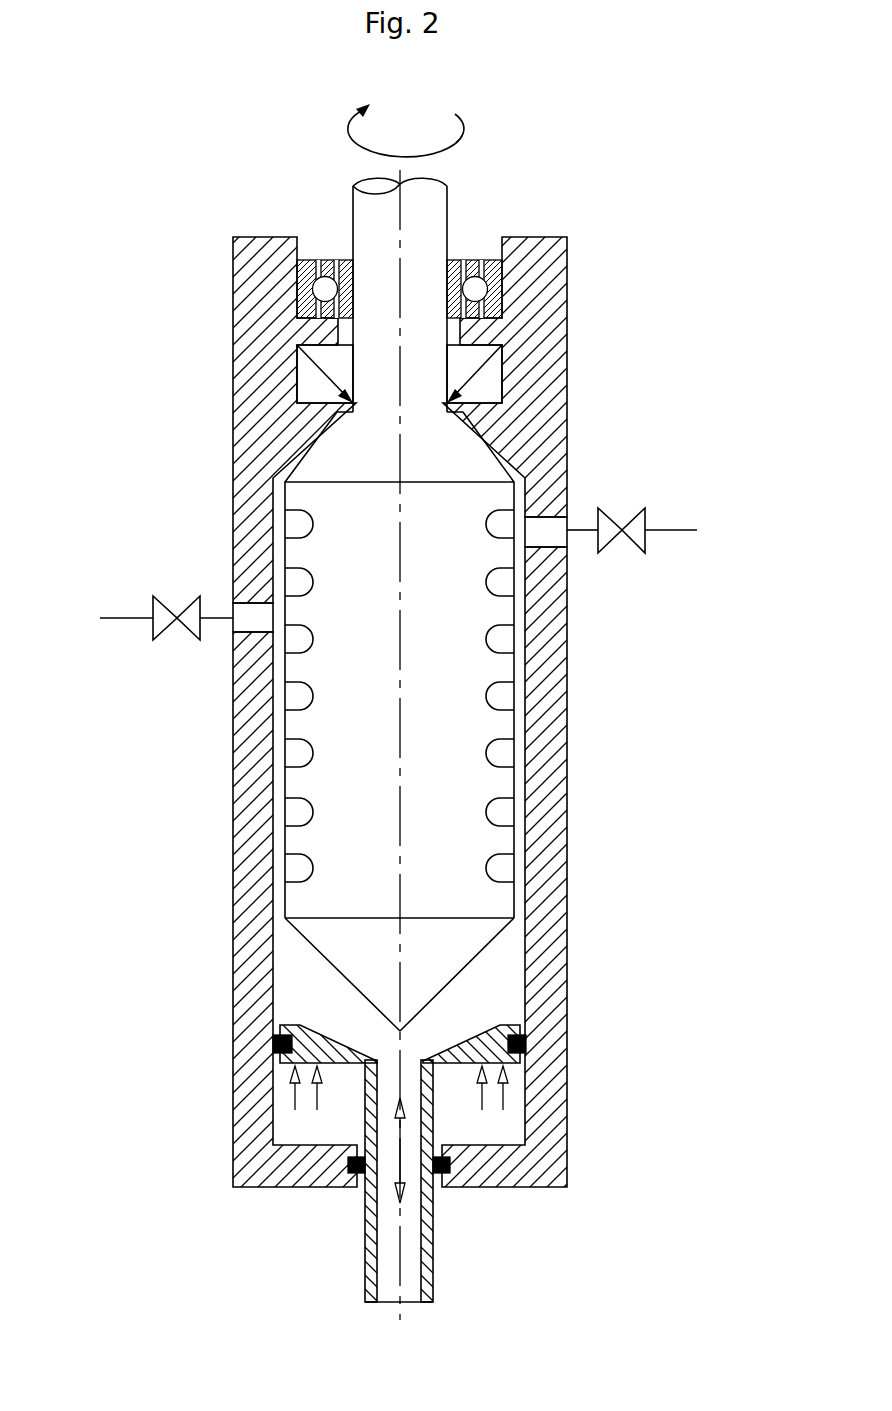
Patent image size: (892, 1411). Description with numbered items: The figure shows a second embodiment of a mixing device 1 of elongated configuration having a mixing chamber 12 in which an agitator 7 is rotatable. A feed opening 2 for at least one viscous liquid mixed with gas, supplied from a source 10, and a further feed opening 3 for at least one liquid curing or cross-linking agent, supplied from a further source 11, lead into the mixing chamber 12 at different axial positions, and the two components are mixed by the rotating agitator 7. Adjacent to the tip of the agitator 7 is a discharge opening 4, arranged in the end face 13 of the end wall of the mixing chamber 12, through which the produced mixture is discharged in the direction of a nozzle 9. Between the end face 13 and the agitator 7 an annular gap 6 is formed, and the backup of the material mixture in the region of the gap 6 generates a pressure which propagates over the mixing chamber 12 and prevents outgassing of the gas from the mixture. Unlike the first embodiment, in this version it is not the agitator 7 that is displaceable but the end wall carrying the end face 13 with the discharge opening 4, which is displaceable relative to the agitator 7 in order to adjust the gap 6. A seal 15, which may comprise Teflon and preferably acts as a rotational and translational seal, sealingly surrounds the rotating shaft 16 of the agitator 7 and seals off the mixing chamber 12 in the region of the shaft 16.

The mixing device 1 is at (606, 416).
The feed opening 2 is at (552, 530).
The further feed opening 3 is at (245, 617).
The discharge opening 4 is at (390, 1072).
The gap 6 is at (338, 1007).
The agitator 7 is at (462, 789).
The nozzle 9 is at (365, 1263).
The source 10 is at (672, 532).
The further source 11 is at (127, 618).
The mixing chamber 12 is at (518, 854).
The end face 13 is at (450, 1050).
The seal 15 is at (313, 385).
The shaft 16 is at (380, 218).